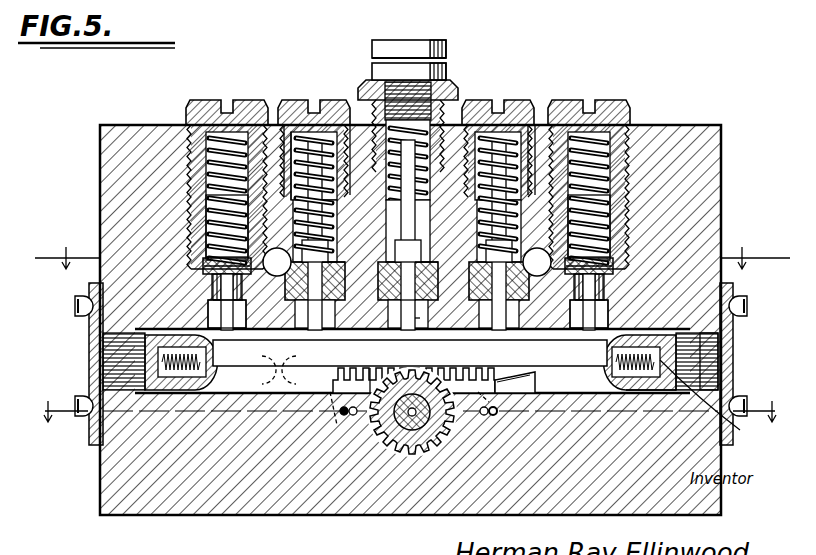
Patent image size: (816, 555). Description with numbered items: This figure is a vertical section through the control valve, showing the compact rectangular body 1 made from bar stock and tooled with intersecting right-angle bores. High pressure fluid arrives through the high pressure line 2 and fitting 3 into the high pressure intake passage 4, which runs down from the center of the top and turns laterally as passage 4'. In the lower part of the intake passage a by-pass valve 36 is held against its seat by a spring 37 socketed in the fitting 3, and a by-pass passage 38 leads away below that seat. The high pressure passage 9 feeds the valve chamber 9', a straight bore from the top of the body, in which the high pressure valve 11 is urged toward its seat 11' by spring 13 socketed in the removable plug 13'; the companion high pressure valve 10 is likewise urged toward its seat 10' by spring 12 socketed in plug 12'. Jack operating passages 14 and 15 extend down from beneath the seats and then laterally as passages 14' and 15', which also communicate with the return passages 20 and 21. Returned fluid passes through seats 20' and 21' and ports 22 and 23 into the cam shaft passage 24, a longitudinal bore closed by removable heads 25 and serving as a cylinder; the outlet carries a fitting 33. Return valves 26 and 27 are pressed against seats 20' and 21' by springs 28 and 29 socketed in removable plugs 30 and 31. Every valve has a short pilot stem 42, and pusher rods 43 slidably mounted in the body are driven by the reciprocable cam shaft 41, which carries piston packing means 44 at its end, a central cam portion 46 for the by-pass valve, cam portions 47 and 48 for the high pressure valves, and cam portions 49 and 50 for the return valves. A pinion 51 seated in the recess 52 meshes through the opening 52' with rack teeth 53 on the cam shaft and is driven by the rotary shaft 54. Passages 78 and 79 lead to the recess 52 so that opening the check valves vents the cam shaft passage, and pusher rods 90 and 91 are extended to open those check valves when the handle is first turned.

The body 1 is at (99, 125).
The high pressure line 2 is at (433, 33).
The fitting 3 is at (448, 90).
The high pressure intake passage 4 is at (428, 197).
The lateral intake passage 4' is at (357, 127).
The high pressure passage 9 is at (411, 404).
The valve chamber 9' is at (529, 126).
The high pressure valve 10 is at (314, 130).
The valve seat 10' is at (285, 128).
The high pressure valve 11 is at (498, 126).
The valve seat 11' is at (548, 130).
The spring 12 is at (320, 143).
The removable plug 12' is at (305, 117).
The spring 13 is at (411, 251).
The removable plug 13' is at (510, 235).
The jack operating passage 14 is at (339, 277).
The lateral jack operating passage 14' is at (304, 235).
The jack operating passage 15 is at (430, 277).
The lateral jack operating passage 15' is at (448, 136).
The return passage 20 is at (188, 226).
The valve seat 20' is at (190, 268).
The return passage 21 is at (618, 226).
The valve seat 21' is at (622, 254).
The port 22 is at (100, 304).
The port 23 is at (608, 312).
The cam shaft passage 24 is at (130, 376).
The removable head 25 is at (103, 342).
The return valve 26 is at (212, 262).
The return valve 27 is at (610, 260).
The spring 28 is at (206, 196).
The spring 29 is at (612, 198).
The removable plug 30 is at (200, 106).
The removable plug 31 is at (614, 106).
The fitting 33 is at (338, 286).
The by-pass valve 36 is at (398, 170).
The spring 37 is at (410, 230).
The by-pass passage 38 is at (357, 314).
The cam shaft 41 is at (745, 443).
The pilot stem 42 is at (220, 300).
The pusher rod 43 is at (730, 312).
The piston packing means 44 is at (78, 313).
The cam portion 46 is at (410, 353).
The cam portion 47 is at (343, 370).
The cam portion 48 is at (467, 370).
The cam portion 49 is at (204, 360).
The cam portion 50 is at (612, 345).
The pinion 51 is at (352, 417).
The recess 52 is at (279, 362).
The opening 52' is at (513, 362).
The rack teeth 53 is at (371, 370).
The rotary shaft 54 is at (396, 448).
The passage 78 is at (486, 405).
The passage 79 is at (342, 416).
The pusher rod 90 is at (491, 416).
The pusher rod 91 is at (336, 428).